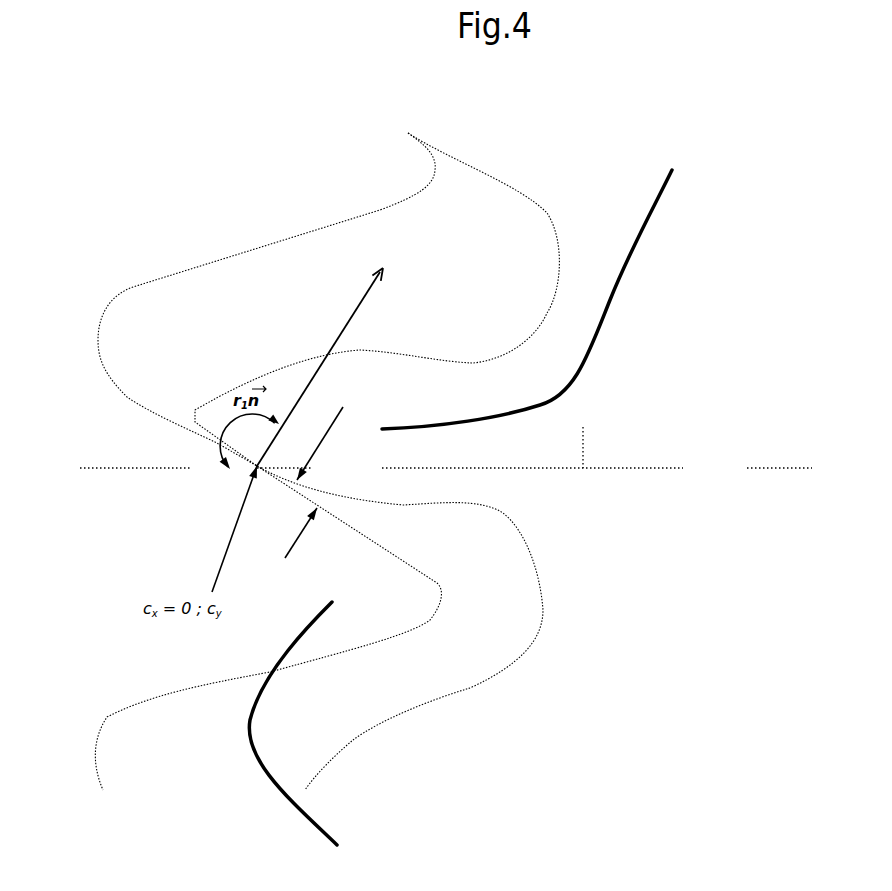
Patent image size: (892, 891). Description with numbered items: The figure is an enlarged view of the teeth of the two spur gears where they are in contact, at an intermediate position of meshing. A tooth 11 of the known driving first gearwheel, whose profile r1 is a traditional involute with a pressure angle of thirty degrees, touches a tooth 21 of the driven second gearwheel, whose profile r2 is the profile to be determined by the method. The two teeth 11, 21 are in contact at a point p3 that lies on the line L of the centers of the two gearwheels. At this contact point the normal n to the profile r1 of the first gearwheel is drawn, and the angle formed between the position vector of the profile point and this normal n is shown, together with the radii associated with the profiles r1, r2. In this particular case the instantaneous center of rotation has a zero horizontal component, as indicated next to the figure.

The tooth of the first gearwheel 11 is at (306, 746).
The tooth of the second gearwheel 21 is at (543, 278).
The line of the centers L is at (583, 435).
The point of contact p3 is at (257, 466).
The profile of the teeth of the first gearwheel r1 is at (295, 544).
The profile of the teeth of the second gearwheel r2 is at (326, 437).
The normal to the profile n is at (385, 247).